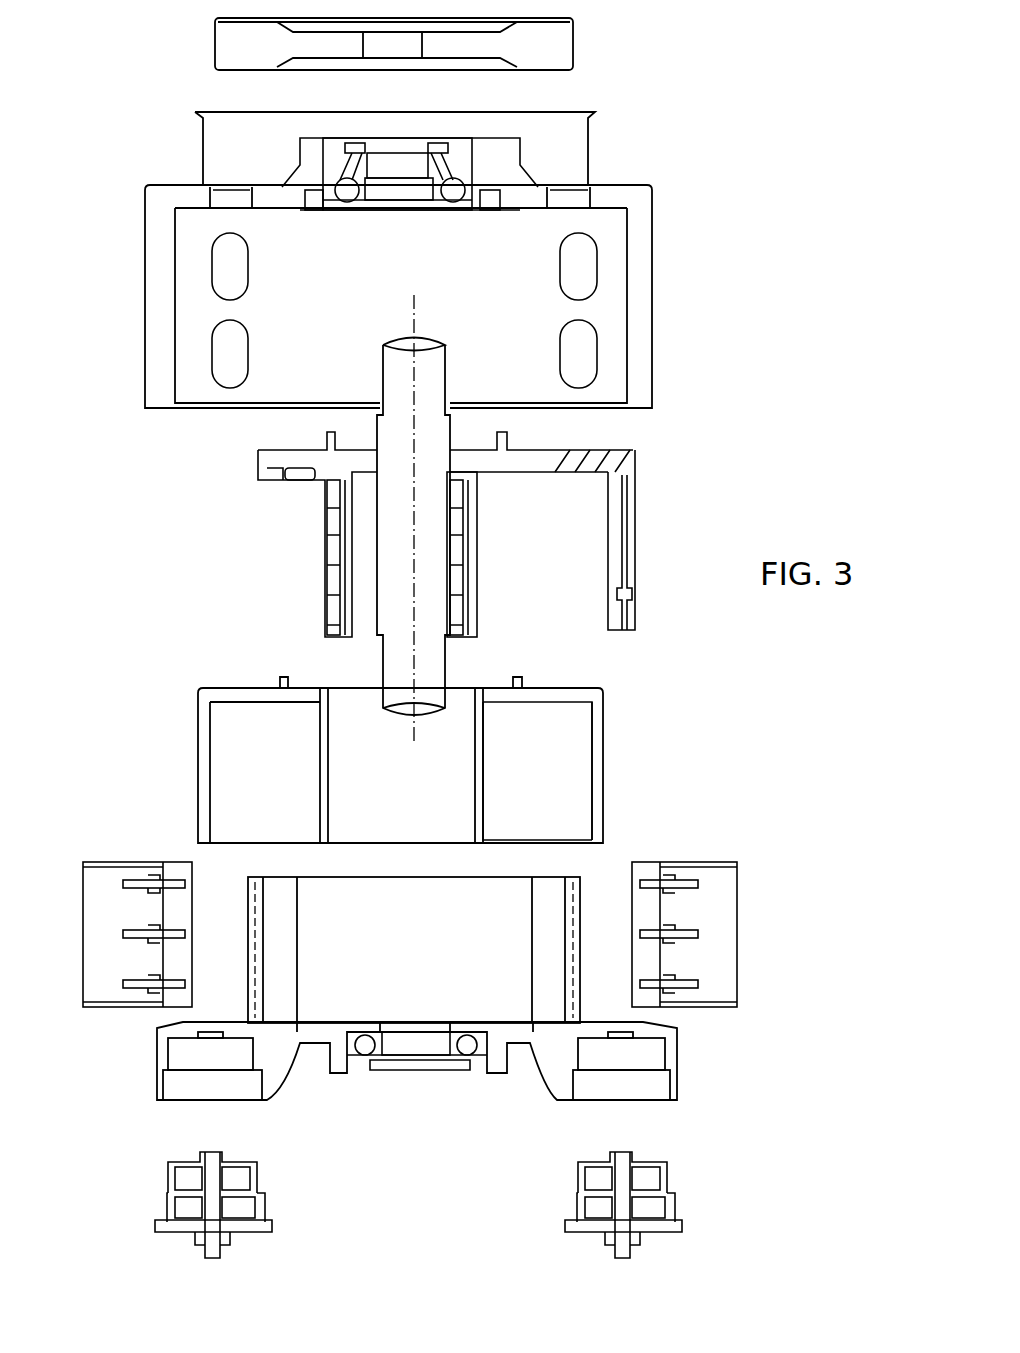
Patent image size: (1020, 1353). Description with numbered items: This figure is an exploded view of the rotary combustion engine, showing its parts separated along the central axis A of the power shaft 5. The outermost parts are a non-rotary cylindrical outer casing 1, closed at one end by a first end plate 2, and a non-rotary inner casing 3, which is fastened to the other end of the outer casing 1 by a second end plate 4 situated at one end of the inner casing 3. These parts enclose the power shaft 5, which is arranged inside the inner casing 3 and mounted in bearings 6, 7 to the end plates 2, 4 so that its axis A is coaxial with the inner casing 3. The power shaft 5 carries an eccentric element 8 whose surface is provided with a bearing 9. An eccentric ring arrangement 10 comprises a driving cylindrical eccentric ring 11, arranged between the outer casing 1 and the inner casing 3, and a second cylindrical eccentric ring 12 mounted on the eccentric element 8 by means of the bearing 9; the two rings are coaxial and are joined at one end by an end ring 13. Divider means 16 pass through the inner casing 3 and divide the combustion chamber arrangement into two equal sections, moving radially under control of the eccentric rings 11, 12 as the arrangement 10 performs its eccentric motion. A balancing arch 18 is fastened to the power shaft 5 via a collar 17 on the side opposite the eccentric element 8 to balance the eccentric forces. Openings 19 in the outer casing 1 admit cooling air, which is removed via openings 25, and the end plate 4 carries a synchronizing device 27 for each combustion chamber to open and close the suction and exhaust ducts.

The non-rotary cylindrical outer casing 1 is at (662, 255).
The first end plate 2 is at (612, 196).
The non-rotary inner casing 3 is at (586, 933).
The second end plate 4 is at (327, 1045).
The power shaft 5 is at (283, 548).
The bearing 6 is at (487, 152).
The bearing 7 is at (500, 1068).
The eccentric element 8 is at (377, 575).
The bearing 9 is at (466, 552).
The eccentric ring arrangement 10 is at (622, 736).
The driving cylindrical eccentric ring 11 is at (596, 794).
The second cylindrical eccentric ring 12 is at (482, 793).
The end ring 13 is at (553, 698).
The divider means 16 is at (105, 877).
The collar 17 is at (553, 474).
The balancing arch 18 is at (637, 542).
The openings 19 is at (240, 348).
The openings 25 is at (236, 190).
The synchronizing device 27 is at (275, 1201).
The central axis A is at (416, 312).